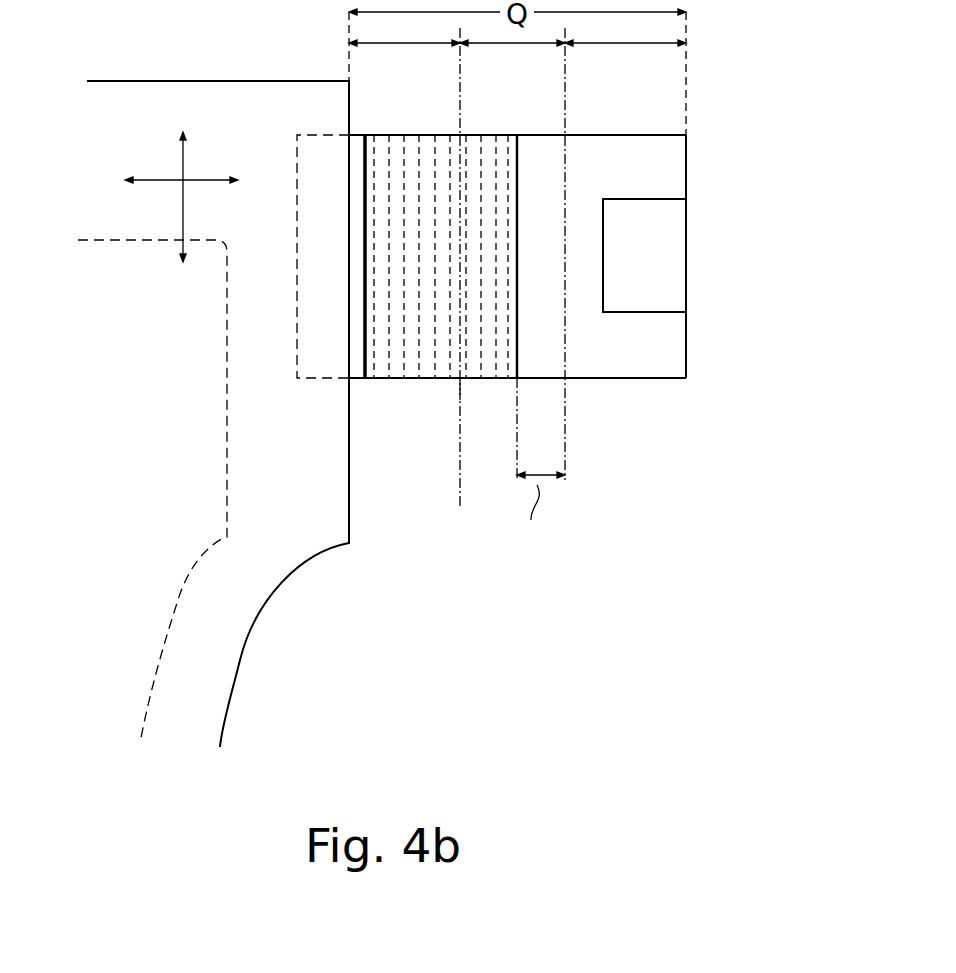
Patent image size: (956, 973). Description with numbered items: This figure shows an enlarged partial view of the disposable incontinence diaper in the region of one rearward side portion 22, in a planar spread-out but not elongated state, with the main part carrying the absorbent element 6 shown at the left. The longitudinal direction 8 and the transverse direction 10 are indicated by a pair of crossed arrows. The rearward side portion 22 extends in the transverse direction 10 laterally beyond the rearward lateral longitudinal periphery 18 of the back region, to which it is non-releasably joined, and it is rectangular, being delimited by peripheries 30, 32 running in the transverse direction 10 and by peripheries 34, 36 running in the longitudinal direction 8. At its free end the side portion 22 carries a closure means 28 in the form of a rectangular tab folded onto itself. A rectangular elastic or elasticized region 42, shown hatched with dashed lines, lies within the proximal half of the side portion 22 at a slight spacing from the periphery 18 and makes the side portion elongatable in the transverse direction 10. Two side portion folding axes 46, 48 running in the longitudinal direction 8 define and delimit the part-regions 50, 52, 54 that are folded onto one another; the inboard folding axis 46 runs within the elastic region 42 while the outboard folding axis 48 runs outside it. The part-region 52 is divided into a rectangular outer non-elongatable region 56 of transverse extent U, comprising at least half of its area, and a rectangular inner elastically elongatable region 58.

The absorbent element 6 is at (121, 593).
The longitudinal direction 8 is at (182, 144).
The transverse direction 10 is at (207, 178).
The rearward lateral longitudinal periphery 18 is at (347, 434).
The rearward side portion 22 is at (700, 258).
The closure means 28 is at (663, 235).
The periphery running in the transverse direction 30 is at (595, 137).
The periphery running in the transverse direction 32 is at (648, 378).
The periphery running in the longitudinal direction 34 is at (294, 205).
The periphery running in the longitudinal direction 36 is at (688, 152).
The elastic or elasticized region 42 is at (412, 372).
The inboard side portion folding axis 46 is at (458, 492).
The outboard side portion folding axis 48 is at (566, 437).
The part-region 50 is at (400, 46).
The part-region 52 is at (520, 46).
The part-region 54 is at (620, 46).
The outer non-elongatable region 56 is at (551, 368).
The inner elastically elongatable region 58 is at (492, 372).